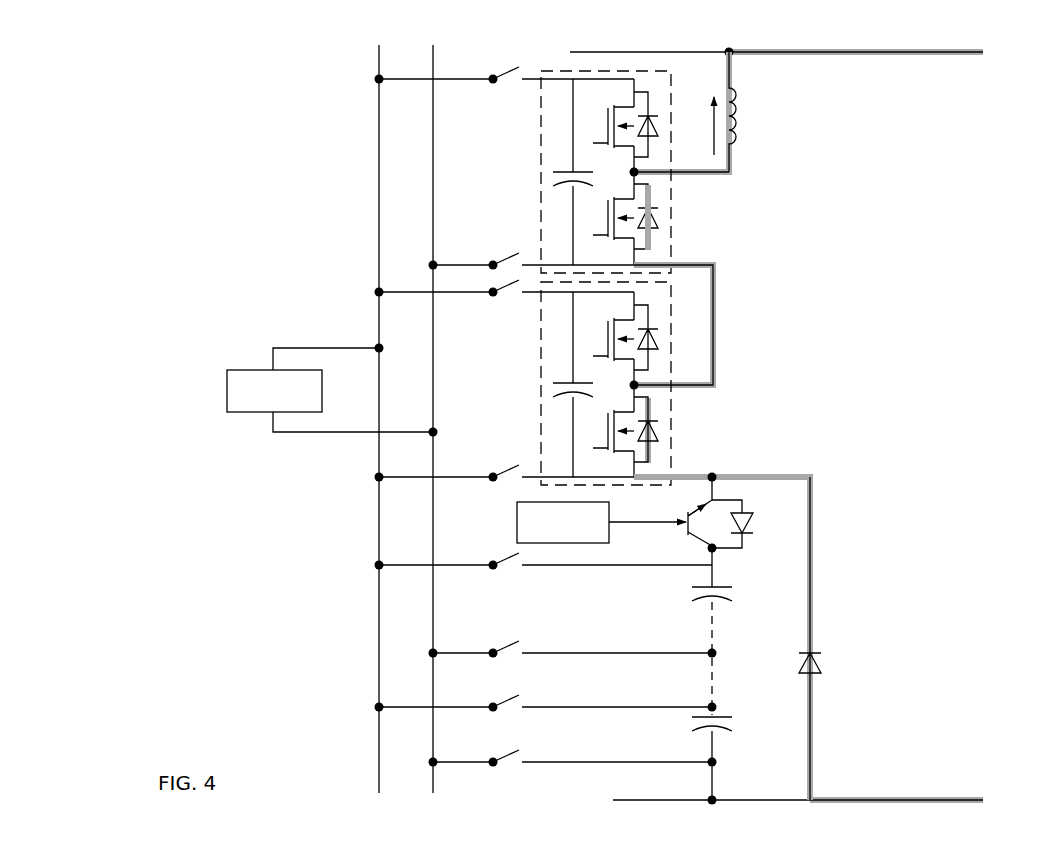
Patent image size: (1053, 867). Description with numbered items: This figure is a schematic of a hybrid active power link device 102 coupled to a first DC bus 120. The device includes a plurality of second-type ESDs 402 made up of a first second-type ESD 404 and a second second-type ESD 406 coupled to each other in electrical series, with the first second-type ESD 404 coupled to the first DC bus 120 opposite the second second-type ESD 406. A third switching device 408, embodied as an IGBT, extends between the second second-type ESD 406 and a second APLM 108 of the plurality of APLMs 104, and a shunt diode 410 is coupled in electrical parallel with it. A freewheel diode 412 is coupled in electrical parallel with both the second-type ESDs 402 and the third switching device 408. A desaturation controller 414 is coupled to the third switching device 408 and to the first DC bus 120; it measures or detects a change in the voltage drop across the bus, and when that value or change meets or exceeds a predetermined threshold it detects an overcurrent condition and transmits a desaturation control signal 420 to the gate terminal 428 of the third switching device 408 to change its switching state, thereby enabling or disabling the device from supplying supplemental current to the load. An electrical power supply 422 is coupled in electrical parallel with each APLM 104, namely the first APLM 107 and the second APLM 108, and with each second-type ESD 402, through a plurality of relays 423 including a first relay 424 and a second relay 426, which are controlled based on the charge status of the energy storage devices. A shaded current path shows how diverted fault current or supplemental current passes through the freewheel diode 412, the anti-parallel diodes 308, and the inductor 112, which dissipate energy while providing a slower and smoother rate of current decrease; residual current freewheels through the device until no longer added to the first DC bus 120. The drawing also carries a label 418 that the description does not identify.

The hybrid active power link device 102 is at (300, 113).
The active power link module 104 is at (608, 65).
The first APLM 107 is at (675, 223).
The second APLM 108 is at (688, 426).
The inductor 112 is at (737, 140).
The first DC bus 120 is at (850, 52).
The anti-parallel diodes 308 is at (655, 233).
The second-type ESDs 402 is at (733, 743).
The first second-type ESD 404 is at (727, 703).
The second second-type ESD 406 is at (722, 600).
The third switching device 408 is at (690, 546).
The shunt diode 410 is at (744, 538).
The freewheel diode 412 is at (816, 673).
The desaturation controller 414 is at (517, 537).
The capacitor 418 is at (450, 397).
The desaturation control signal 420 is at (661, 524).
The electrical power supply 422 is at (288, 402).
The plurality of relays 423 is at (505, 62).
The first relay 424 is at (510, 87).
The second relay 426 is at (512, 247).
The gate terminal 428 is at (706, 510).